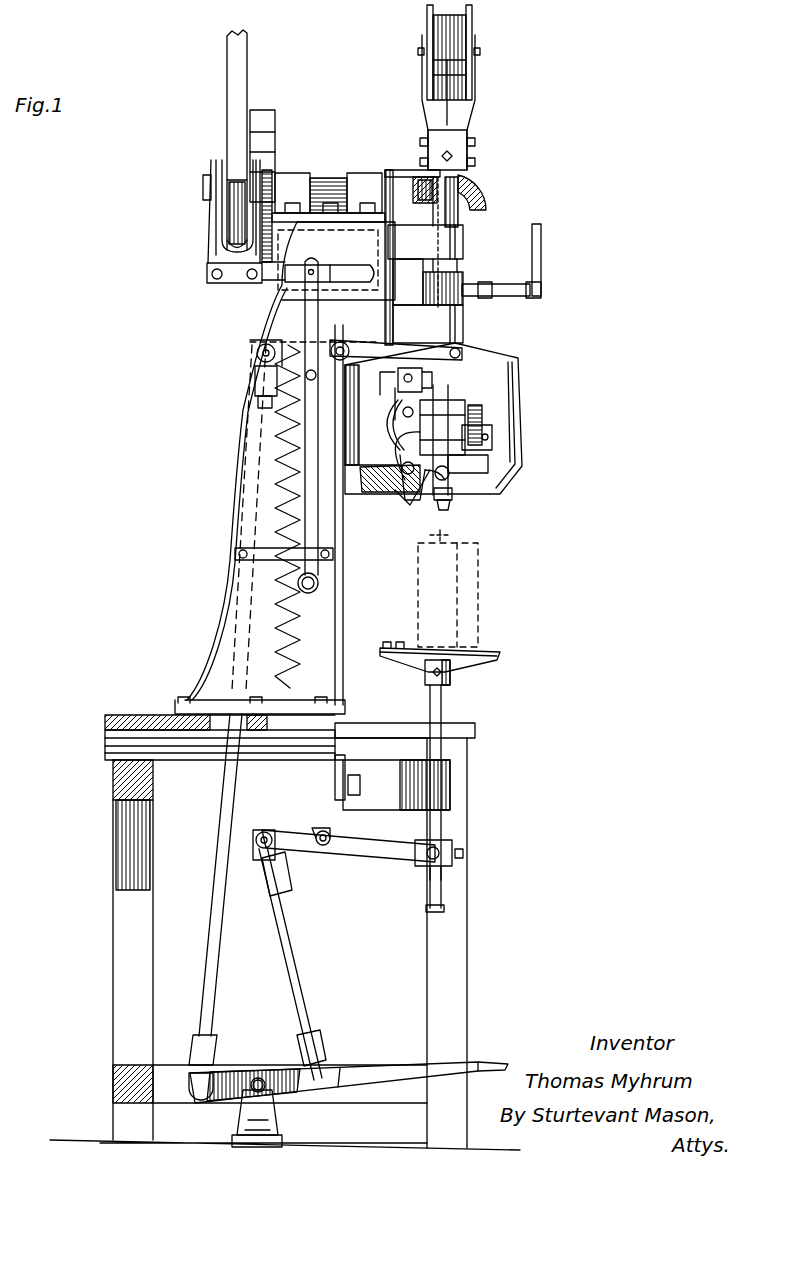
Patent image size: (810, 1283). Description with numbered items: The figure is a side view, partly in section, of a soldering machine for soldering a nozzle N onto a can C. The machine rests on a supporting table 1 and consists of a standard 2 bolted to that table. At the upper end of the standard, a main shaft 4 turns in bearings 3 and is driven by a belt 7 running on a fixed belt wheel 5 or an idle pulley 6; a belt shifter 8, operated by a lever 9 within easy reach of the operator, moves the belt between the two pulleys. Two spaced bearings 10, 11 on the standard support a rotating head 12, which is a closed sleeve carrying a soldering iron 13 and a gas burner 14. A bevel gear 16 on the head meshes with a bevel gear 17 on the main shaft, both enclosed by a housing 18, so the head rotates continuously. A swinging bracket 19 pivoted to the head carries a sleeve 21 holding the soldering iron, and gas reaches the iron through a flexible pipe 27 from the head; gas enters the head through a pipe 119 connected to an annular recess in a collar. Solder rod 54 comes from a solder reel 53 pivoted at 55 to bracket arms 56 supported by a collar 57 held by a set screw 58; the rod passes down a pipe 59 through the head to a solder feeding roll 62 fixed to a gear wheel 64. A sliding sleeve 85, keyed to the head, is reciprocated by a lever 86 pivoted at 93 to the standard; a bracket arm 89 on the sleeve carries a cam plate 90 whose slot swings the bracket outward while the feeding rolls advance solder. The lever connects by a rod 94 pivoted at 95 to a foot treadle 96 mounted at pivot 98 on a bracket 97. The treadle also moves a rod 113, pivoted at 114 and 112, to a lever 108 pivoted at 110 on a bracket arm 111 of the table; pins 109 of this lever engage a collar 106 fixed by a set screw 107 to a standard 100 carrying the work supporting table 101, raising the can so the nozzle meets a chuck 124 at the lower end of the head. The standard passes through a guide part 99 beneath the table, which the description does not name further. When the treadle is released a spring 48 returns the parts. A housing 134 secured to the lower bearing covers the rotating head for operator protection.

The supporting table 1 is at (476, 733).
The standard 2 is at (240, 490).
The bearings 3 is at (292, 178).
The main shaft 4 is at (328, 182).
The belt wheel 5 is at (266, 122).
The idle pulley 6 is at (240, 140).
The belt 7 is at (247, 67).
The belt shifter 8 is at (232, 270).
The lever 9 is at (310, 458).
The bearing 10 is at (463, 233).
The bearing 11 is at (463, 318).
The rotating head 12 is at (445, 272).
The soldering iron 13 is at (420, 505).
The gas burner 14 is at (497, 485).
The bevel gear 16 is at (480, 200).
The bevel gear 17 is at (418, 185).
The housing 18 is at (458, 190).
The swinging bracket 19 is at (400, 480).
The sleeve 21 is at (410, 498).
The flexible pipe 27 is at (450, 410).
The spring 48 is at (268, 385).
The solder reel 53 is at (472, 12).
The solder rod 54 is at (447, 100).
The pivot 55 is at (480, 52).
The bracket arms 56 is at (425, 122).
The collar 57 is at (455, 155).
The set screw 58 is at (450, 158).
The pipe 59 is at (396, 425).
The solder feeding roll 62 is at (482, 430).
The gear wheel 64 is at (478, 458).
The sliding sleeve 85 is at (475, 348).
The lever 86 is at (396, 354).
The bracket arm 89 is at (395, 380).
The cam plate 90 is at (432, 378).
The pivot 93 is at (341, 348).
The rod 94 is at (210, 885).
The pivot 95 is at (210, 1080).
The foot treadle 96 is at (370, 1071).
The bracket 97 is at (272, 1122).
The pivot 98 is at (259, 1082).
The bracket box 99 is at (452, 790).
The standard 100 is at (443, 695).
The work supporting table 101 is at (478, 652).
The collar 106 is at (455, 845).
The set screw 107 is at (465, 853).
The lever 108 is at (368, 858).
The pins 109 is at (441, 866).
The pivot 110 is at (322, 848).
The bracket arm 111 is at (305, 783).
The pivot 112 is at (256, 840).
The rod 113 is at (300, 955).
The pivot 114 is at (375, 260).
The pipe 119 is at (510, 288).
The chuck 124 is at (450, 503).
The housing 134 is at (522, 392).
The nozzle N is at (450, 535).
The can C is at (470, 580).